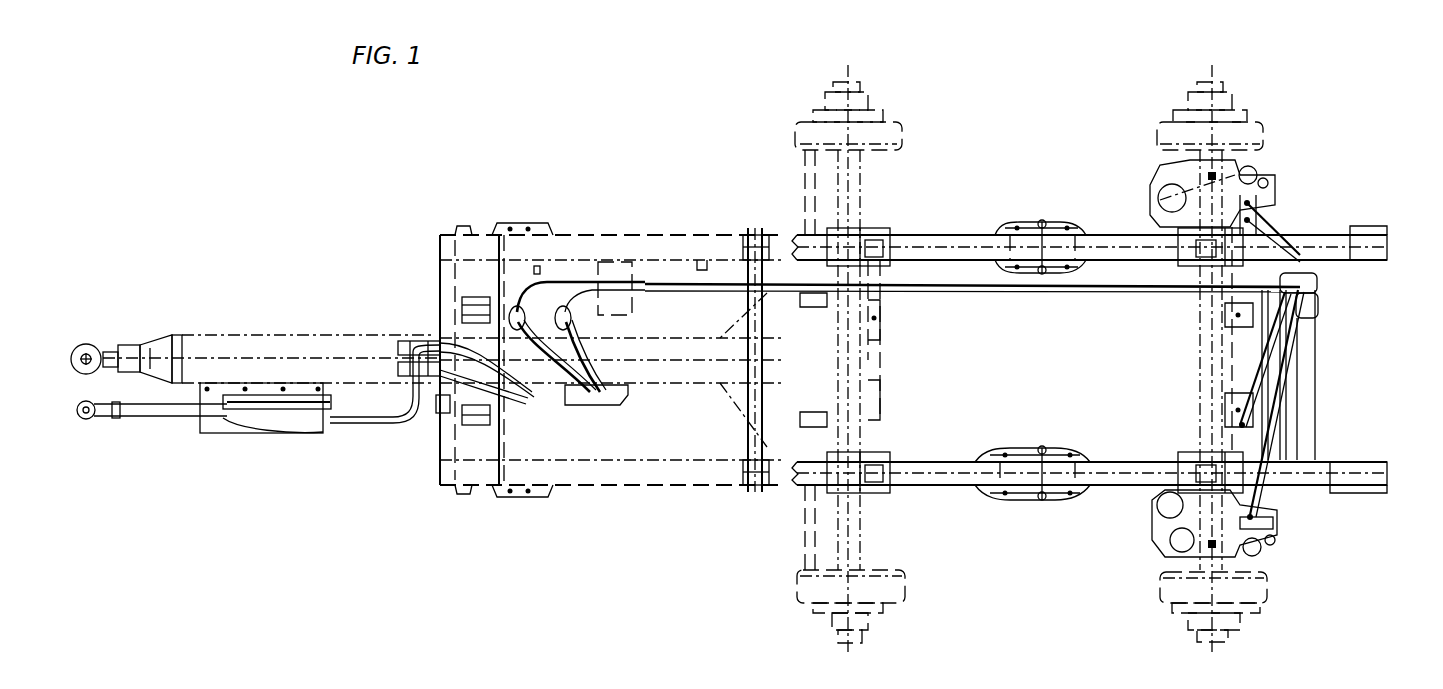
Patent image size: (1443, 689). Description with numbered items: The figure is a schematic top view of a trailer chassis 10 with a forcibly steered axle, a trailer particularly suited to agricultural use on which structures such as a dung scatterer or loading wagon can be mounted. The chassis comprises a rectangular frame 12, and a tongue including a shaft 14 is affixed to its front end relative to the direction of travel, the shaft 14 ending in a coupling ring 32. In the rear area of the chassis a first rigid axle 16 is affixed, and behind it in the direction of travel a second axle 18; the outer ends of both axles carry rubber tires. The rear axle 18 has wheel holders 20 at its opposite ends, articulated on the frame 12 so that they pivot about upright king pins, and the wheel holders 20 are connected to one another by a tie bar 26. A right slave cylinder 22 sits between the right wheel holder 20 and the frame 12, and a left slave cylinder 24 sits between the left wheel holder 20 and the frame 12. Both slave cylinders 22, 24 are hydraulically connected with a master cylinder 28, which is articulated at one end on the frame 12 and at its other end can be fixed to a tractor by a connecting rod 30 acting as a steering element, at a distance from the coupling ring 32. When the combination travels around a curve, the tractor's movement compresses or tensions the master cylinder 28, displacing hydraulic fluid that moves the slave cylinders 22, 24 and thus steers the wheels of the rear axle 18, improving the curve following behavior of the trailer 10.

The trailer chassis 10 is at (636, 170).
The rectangular frame 12 is at (960, 474).
The shaft 14 is at (133, 350).
The first rigid axle 16 is at (852, 213).
The second axle 18 is at (1213, 403).
The wheel holder 20 is at (1233, 167).
The right slave cylinder 22 is at (1290, 253).
The left slave cylinder 24 is at (1273, 527).
The tie bar 26 is at (1273, 403).
The master cylinder 28 is at (423, 418).
The connecting rod 30 is at (151, 410).
The coupling ring 32 is at (82, 352).